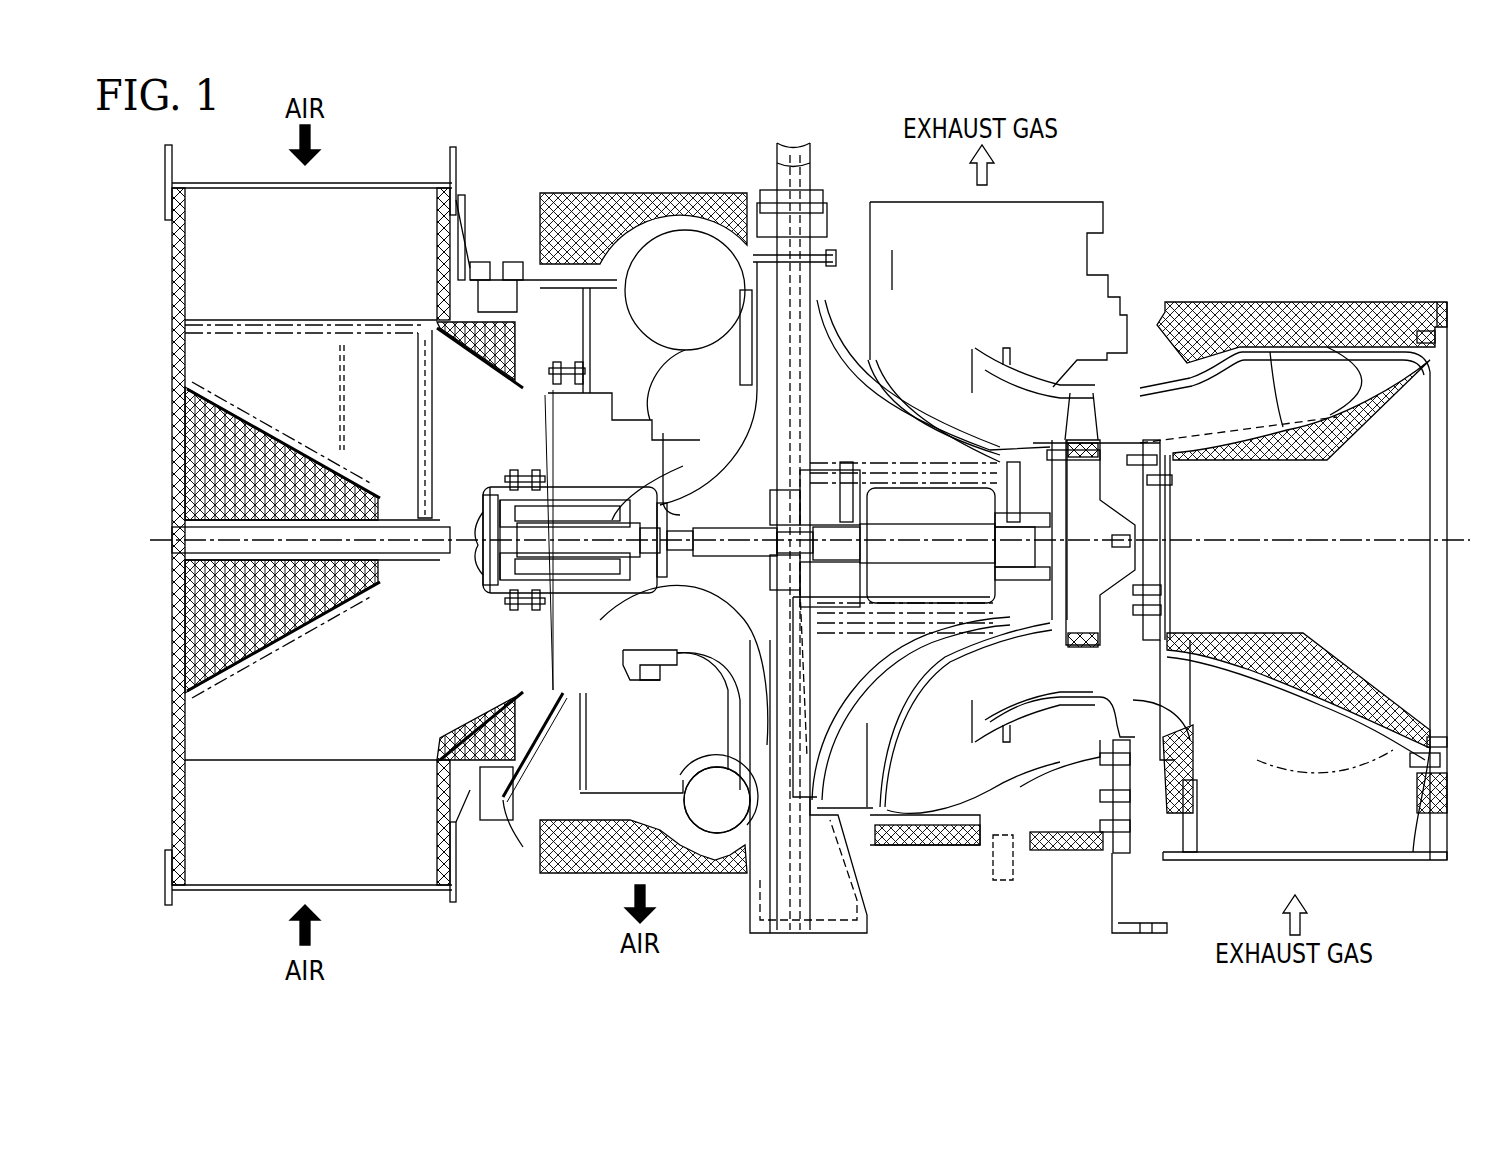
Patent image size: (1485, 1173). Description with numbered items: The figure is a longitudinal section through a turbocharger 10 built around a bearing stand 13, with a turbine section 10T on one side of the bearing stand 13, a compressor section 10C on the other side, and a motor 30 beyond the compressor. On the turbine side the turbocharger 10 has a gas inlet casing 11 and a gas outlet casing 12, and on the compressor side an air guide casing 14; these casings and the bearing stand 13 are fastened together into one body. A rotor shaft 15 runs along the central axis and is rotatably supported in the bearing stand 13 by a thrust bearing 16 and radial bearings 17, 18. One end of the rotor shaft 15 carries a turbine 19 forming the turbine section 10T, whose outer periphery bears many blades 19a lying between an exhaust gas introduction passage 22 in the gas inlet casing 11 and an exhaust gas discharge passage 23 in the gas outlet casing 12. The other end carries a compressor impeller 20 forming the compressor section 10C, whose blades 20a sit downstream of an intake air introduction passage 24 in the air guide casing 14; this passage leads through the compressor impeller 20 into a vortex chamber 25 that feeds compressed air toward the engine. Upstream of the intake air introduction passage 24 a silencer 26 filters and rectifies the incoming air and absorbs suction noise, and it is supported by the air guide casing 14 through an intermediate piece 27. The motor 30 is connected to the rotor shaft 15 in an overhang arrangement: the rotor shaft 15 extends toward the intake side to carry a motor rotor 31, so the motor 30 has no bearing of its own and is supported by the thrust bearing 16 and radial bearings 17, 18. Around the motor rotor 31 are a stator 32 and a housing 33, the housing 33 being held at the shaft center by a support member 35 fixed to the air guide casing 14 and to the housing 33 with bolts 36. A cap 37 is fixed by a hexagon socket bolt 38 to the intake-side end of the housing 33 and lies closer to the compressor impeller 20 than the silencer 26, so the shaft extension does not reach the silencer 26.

The turbocharger 10 is at (1172, 150).
The compressor section 10C is at (712, 405).
The turbine section 10T is at (1122, 398).
The gas inlet casing 11 is at (1327, 413).
The gas outlet casing 12 is at (897, 227).
The bearing stand 13 is at (830, 222).
The air guide casing 14 is at (680, 643).
The rotor shaft 15 is at (900, 560).
The thrust bearing 16 is at (790, 516).
The radial bearing 17 is at (860, 513).
The radial bearing 18 is at (1045, 525).
The turbine 19 is at (1093, 587).
The blades 19a is at (1083, 670).
The compressor impeller 20 is at (708, 580).
The blades 20a is at (683, 466).
The exhaust gas introduction passage 22 is at (1360, 845).
The exhaust gas discharge passage 23 is at (1035, 232).
The intake air introduction passage 24 is at (380, 718).
The vortex chamber 25 is at (720, 823).
The silencer 26 is at (170, 805).
The intermediate piece 27 is at (467, 237).
The motor 30 is at (497, 593).
The motor rotor 31 is at (523, 545).
The stator 32 is at (585, 497).
The housing 33 is at (583, 600).
The support member 35 is at (537, 673).
The bolts 36 is at (557, 375).
The cap 37 is at (497, 588).
The hexagon socket bolt 38 is at (488, 483).